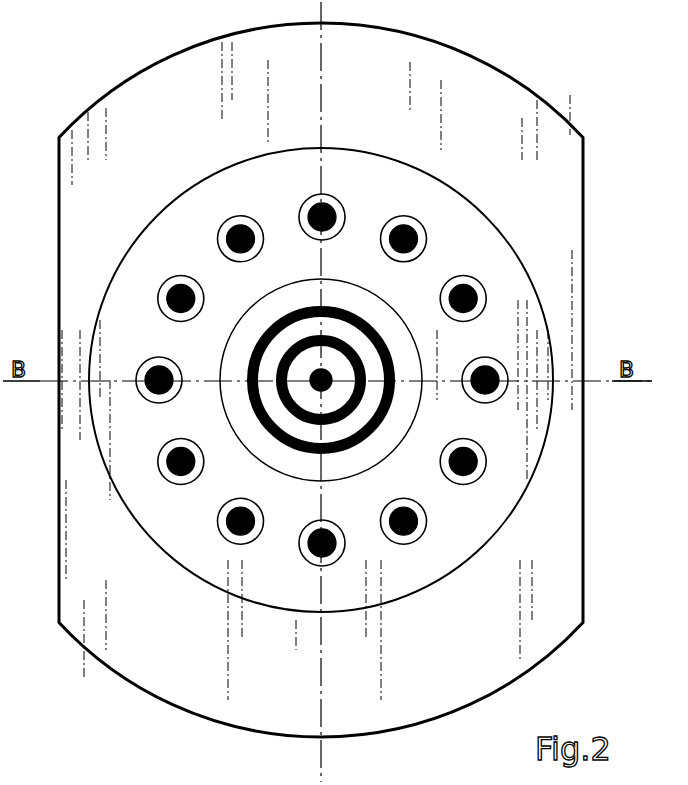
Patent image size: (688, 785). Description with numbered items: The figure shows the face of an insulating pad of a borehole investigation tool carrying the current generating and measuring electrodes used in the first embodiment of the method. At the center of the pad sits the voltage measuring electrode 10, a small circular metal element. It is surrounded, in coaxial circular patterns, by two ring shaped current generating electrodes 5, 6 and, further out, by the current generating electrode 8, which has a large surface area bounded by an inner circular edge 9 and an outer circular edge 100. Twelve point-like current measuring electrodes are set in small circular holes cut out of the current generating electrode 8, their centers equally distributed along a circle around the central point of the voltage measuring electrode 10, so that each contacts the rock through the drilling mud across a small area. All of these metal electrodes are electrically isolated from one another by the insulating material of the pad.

The outer circular edge 100 is at (357, 148).
The current generating electrode 8 is at (434, 243).
The inner circular edge 9 is at (302, 280).
The ring shaped current generating electrode 6 is at (295, 307).
The ring shaped current generating electrode 5 is at (328, 341).
The voltage measuring electrode 10 is at (324, 390).